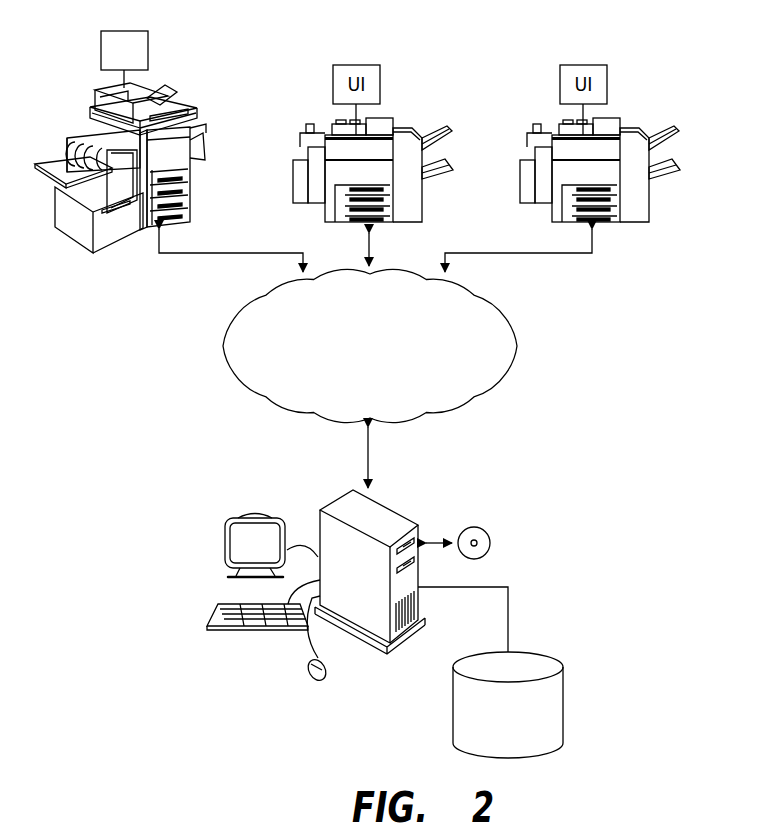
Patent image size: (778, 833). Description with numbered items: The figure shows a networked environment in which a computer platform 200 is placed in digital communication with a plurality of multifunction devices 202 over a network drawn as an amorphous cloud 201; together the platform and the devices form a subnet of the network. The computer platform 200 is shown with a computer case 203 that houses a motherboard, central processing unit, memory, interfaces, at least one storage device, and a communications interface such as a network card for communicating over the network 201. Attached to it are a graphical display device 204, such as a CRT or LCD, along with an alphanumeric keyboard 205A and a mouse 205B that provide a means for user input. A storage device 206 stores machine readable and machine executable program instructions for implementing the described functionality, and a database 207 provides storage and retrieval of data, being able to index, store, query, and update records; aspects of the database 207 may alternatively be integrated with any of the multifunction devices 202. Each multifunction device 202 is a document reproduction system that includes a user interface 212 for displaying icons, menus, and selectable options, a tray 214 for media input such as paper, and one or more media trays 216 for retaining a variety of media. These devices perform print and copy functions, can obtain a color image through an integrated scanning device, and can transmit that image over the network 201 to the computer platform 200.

The computer platform 200 is at (494, 481).
The network 201 is at (504, 307).
The multifunction device 202 is at (177, 71).
The computer case 203 is at (388, 504).
The graphical display device 204 is at (253, 511).
The alphanumeric keyboard 205A is at (247, 631).
The mouse 205B is at (306, 671).
The storage device 206 is at (490, 535).
The database 207 is at (540, 657).
The user interface 212 is at (138, 31).
The tray 214 is at (199, 146).
The media tray 216 is at (184, 210).